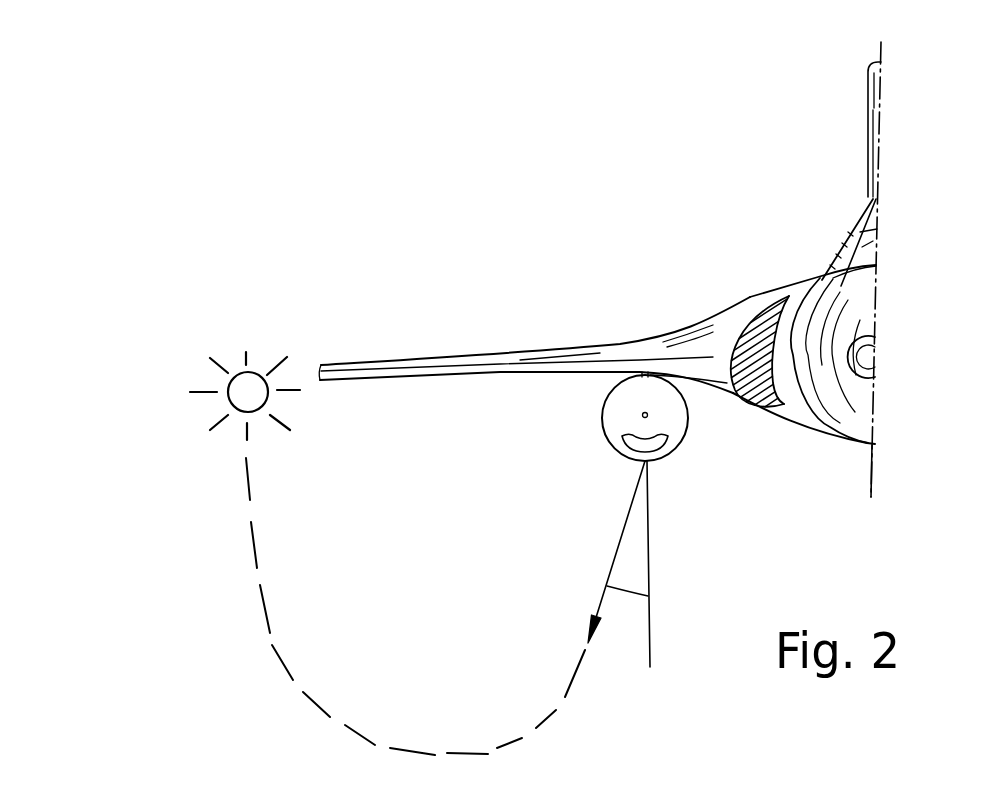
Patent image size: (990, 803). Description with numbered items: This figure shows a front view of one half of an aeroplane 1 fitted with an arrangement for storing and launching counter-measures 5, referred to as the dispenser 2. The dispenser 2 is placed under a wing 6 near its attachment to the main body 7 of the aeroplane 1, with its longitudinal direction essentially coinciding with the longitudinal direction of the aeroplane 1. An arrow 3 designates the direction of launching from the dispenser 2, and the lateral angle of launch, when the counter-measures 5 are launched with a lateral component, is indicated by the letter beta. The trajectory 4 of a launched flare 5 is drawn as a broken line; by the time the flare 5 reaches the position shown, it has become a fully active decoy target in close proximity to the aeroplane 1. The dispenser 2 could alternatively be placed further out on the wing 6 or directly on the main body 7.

The aeroplane 1 is at (860, 398).
The dispenser 2 is at (700, 423).
The arrow 3 is at (620, 543).
The trajectory 4 is at (268, 628).
The counter-measures 5 is at (229, 381).
The wing 6 is at (498, 356).
The main body 7 is at (860, 296).